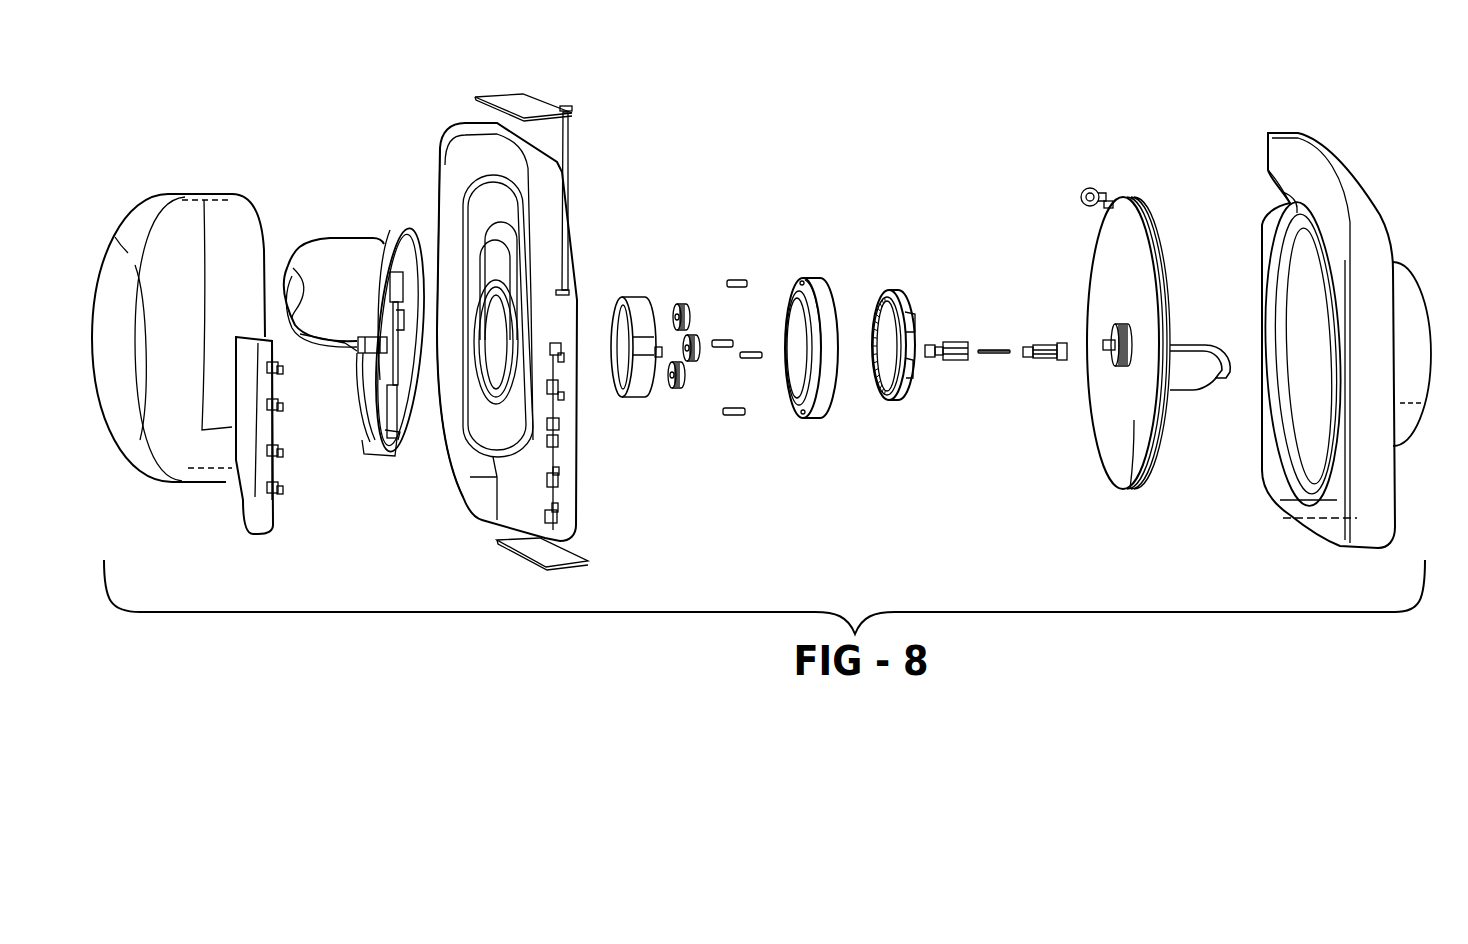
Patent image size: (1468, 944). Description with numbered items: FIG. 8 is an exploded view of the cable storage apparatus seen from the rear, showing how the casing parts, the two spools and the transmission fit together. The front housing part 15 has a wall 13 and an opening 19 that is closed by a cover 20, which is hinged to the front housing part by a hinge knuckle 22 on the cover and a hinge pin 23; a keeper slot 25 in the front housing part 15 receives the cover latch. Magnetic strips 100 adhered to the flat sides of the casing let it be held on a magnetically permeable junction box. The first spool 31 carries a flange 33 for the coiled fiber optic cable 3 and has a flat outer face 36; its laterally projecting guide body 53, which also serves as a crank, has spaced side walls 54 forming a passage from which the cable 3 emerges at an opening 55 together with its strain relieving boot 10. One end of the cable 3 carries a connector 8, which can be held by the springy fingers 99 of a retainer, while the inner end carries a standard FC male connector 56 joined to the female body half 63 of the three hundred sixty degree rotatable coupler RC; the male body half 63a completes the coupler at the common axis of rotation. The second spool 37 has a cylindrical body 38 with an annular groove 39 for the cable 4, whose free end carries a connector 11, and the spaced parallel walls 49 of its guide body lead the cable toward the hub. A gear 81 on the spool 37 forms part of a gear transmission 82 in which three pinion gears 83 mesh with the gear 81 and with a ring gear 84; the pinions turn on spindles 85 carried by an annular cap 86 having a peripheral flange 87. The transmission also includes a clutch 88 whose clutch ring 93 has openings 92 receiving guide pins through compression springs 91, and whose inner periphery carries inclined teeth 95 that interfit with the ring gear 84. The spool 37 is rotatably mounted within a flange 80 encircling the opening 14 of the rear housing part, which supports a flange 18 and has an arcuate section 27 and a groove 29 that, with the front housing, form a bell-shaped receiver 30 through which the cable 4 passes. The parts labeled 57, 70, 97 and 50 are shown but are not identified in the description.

The cover 20 is at (200, 197).
The hinge knuckle 22 is at (277, 487).
The guide body 53 is at (333, 228).
The side walls 54 is at (321, 294).
The opening 55 is at (293, 263).
The clip block 57 is at (367, 337).
The strain relieving boot 10 is at (347, 357).
The standard FC male connector 56 is at (367, 357).
The flat outer face 36 is at (370, 417).
The first spool 31 is at (363, 466).
The connector 8 is at (399, 272).
The fiber optic cable 3 is at (403, 382).
The flange 33 is at (397, 432).
The springy fingers 99 is at (402, 327).
The wall 13 is at (516, 493).
The front housing part 15 is at (462, 508).
The keeper slot 25 is at (463, 308).
The ring gear 84 is at (430, 292).
The opening 19 is at (503, 360).
The hinge pin 23 is at (570, 130).
The magnetic strips 100 is at (510, 97).
The peripheral flange 87 is at (633, 297).
The spindles 85 is at (658, 360).
The annular cap 86 is at (657, 357).
The pinion gears 83 is at (695, 335).
The compression springs 91 is at (733, 278).
The gear transmission 82 is at (778, 420).
The openings 92 is at (800, 282).
The axially inclined teeth 95 is at (798, 347).
The clutch ring 93 is at (825, 293).
The tab 97 is at (913, 373).
The clutch 88 is at (920, 260).
The female body half 63 is at (950, 337).
The shaft 70 is at (1003, 347).
The male body half 63a is at (1050, 335).
The rotatable coupler RC is at (1003, 365).
The second spool 37 is at (1147, 190).
The cylindrical body 38 is at (1115, 409).
The annular groove 39 is at (1150, 490).
The gear 81 is at (1120, 323).
The connector 11 is at (1090, 186).
The fiber optic cable 4 is at (1107, 202).
The parallel walls 49 is at (1193, 388).
The bell-shaped receiver 30 is at (1253, 142).
The arcuate section 27 is at (1273, 181).
The groove 29 is at (1289, 208).
The opening 14 is at (1316, 274).
The flange 80 is at (1293, 335).
The knob 50 is at (1409, 282).
The flange 18 is at (1357, 518).